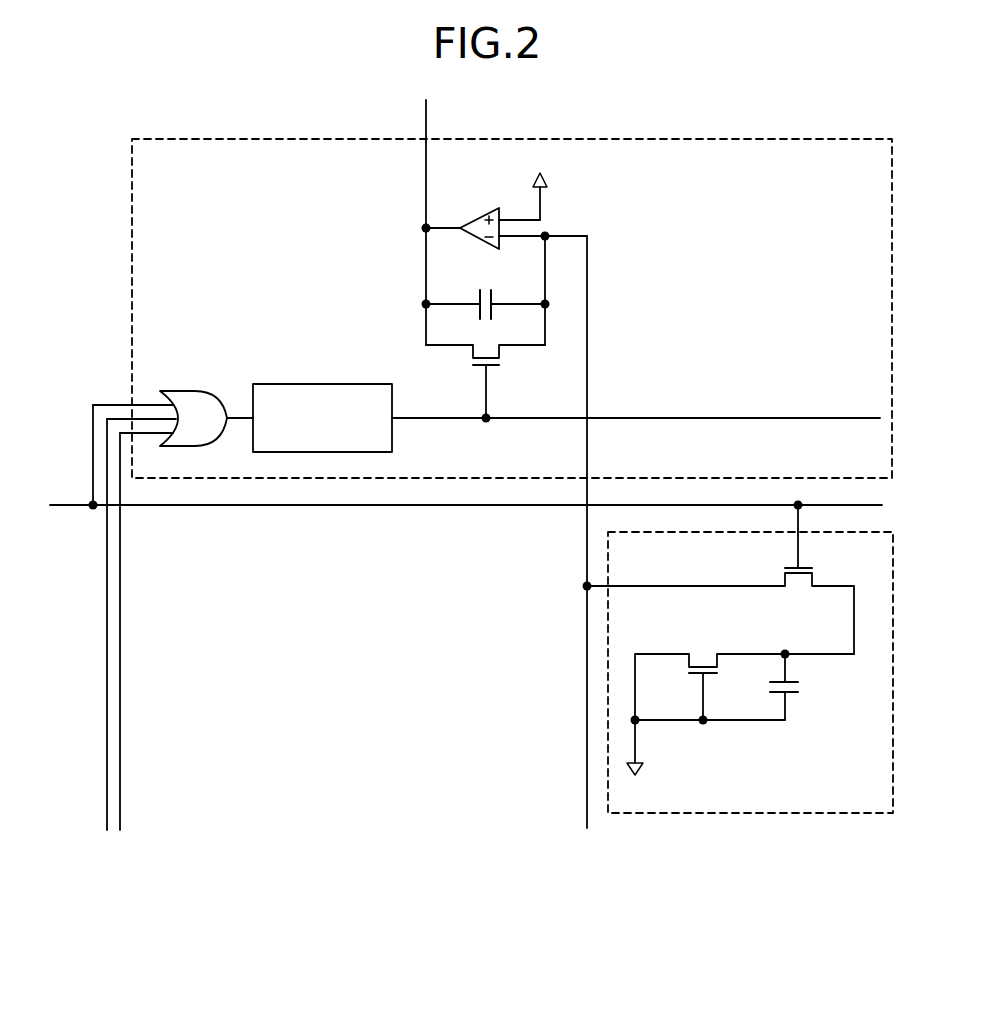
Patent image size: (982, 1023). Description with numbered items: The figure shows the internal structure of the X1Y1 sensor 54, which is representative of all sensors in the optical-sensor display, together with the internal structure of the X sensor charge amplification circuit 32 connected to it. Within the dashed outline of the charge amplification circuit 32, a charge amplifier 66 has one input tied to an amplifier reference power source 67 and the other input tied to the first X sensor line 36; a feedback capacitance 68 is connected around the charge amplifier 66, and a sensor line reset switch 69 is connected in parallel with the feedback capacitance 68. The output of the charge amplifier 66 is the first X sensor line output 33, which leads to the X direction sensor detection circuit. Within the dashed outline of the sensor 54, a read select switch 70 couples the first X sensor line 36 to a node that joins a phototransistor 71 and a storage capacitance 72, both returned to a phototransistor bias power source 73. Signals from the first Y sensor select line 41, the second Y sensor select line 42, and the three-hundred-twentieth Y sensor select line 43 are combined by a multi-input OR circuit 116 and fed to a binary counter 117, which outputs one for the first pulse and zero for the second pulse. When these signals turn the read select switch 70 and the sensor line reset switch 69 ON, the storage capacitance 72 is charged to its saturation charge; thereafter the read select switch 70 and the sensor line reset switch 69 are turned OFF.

The X sensor charge amplification circuit 32 is at (813, 138).
The first X sensor line output 33 is at (426, 113).
The first X sensor line 36 is at (586, 545).
The first Y sensor select line 41 is at (243, 510).
The second Y sensor select line 42 is at (106, 663).
The 320-th Y sensor select line 43 is at (120, 692).
The X1Y1 sensor 54 is at (757, 814).
The charge amplifier 66 is at (478, 208).
The amplifier reference power source 67 is at (548, 179).
The feedback capacitance 68 is at (478, 287).
The sensor line reset switch 69 is at (505, 368).
The read select switch 70 is at (778, 570).
The phototransistor 71 is at (703, 650).
The storage capacitance 72 is at (800, 690).
The phototransistor bias power source 73 is at (645, 768).
The multi-input OR circuit 116 is at (193, 390).
The binary counter 117 is at (325, 384).